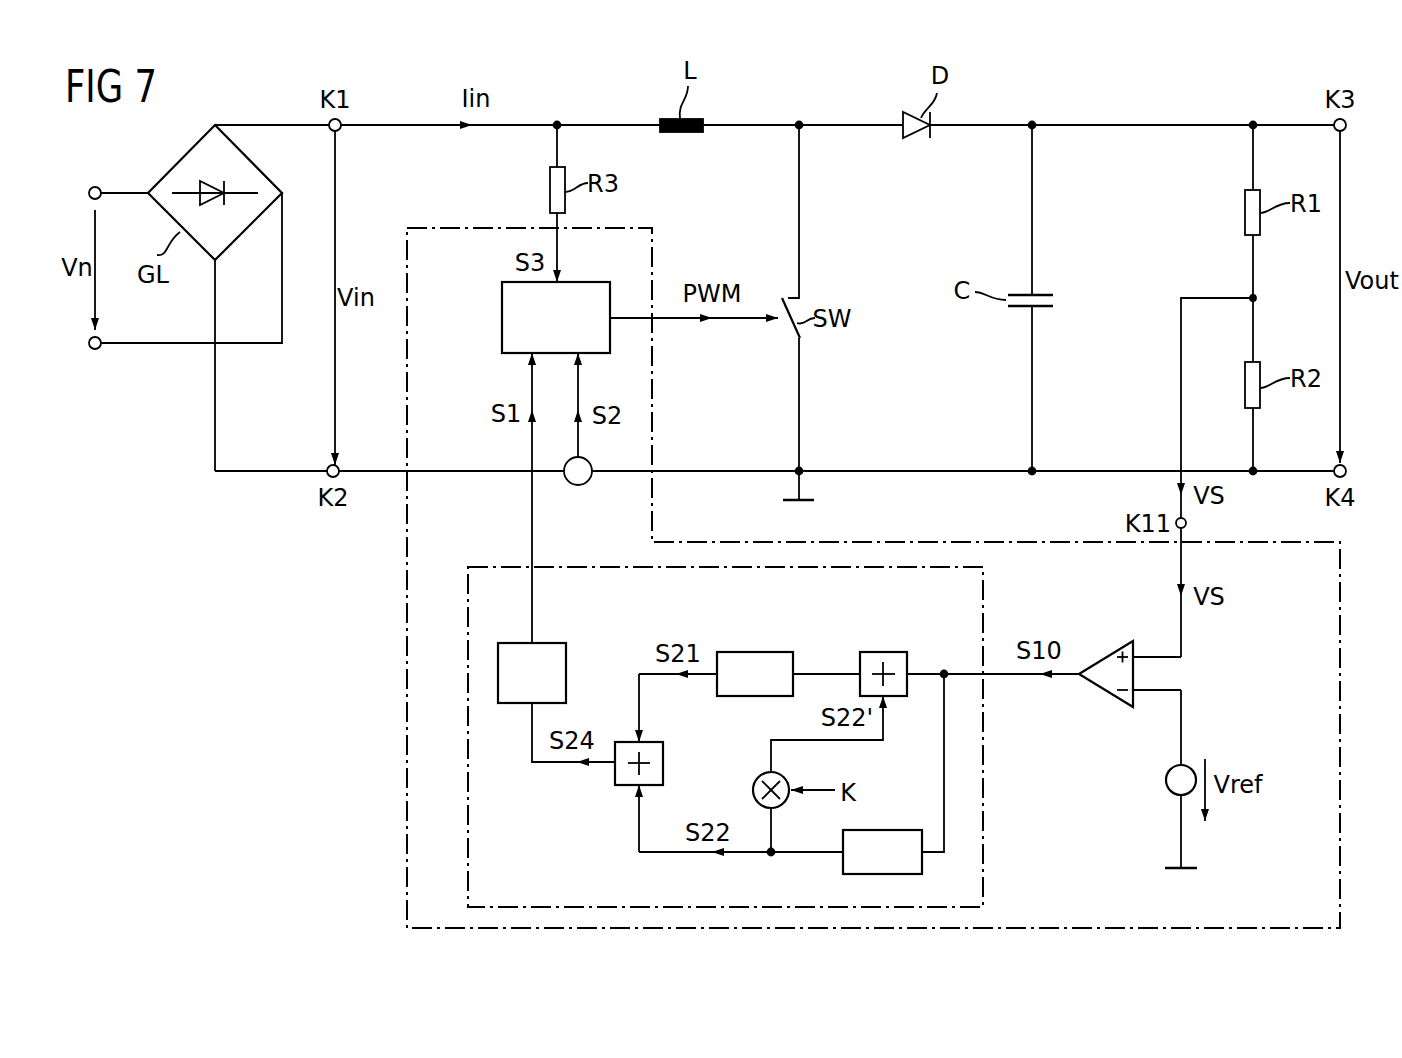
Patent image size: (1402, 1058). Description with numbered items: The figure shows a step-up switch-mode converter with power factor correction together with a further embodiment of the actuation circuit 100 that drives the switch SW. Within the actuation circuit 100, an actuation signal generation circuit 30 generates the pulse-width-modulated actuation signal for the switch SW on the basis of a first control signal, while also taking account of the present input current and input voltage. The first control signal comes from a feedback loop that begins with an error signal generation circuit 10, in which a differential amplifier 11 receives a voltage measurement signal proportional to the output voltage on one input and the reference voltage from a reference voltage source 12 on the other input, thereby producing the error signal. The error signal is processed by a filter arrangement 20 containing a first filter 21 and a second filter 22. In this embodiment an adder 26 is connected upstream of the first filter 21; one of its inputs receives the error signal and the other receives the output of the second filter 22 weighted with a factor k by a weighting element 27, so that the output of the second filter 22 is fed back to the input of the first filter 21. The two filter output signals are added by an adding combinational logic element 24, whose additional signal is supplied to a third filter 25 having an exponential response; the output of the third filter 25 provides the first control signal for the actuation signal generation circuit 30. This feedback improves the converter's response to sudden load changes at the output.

The actuation circuit 100 is at (407, 690).
The filter arrangement 20 is at (492, 567).
The actuation signal generation circuit 30 is at (502, 318).
The third filter 25 is at (566, 660).
The adding combinational logic element 24 is at (615, 782).
The first filter 21 is at (755, 652).
The adder 26 is at (883, 652).
The multiplier 27 is at (754, 785).
The second filter 22 is at (885, 830).
The error signal generation circuit 10 is at (1205, 668).
The differential amplifier 11 is at (1106, 695).
The reference voltage source 12 is at (1166, 780).